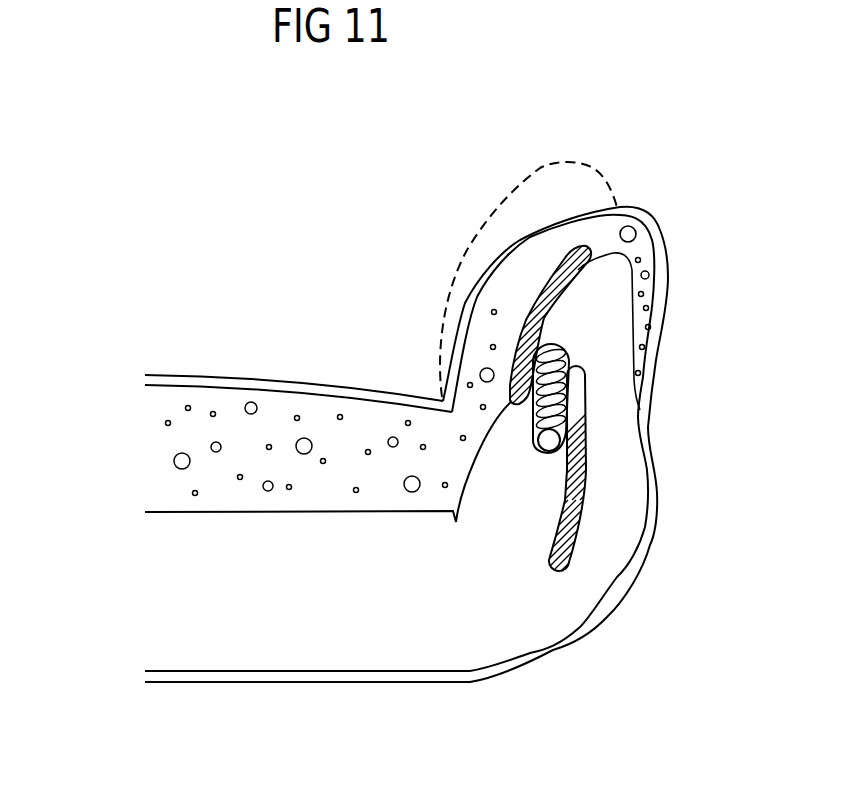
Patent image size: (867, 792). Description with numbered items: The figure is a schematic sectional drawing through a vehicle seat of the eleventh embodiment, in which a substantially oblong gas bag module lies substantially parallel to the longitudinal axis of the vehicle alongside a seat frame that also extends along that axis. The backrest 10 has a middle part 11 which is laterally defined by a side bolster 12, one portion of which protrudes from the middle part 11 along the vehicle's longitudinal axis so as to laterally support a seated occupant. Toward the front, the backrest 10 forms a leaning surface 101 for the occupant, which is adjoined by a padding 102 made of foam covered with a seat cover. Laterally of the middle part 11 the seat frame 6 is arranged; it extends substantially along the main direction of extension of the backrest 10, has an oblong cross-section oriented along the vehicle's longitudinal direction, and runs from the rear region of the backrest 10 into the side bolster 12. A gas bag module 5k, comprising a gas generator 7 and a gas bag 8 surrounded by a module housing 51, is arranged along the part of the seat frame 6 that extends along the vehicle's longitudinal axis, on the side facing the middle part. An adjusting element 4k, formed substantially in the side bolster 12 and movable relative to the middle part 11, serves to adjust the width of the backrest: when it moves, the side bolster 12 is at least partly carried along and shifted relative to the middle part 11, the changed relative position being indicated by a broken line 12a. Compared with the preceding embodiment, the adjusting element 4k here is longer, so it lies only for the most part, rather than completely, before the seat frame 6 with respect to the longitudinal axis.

The backrest 10 is at (588, 647).
The middle part 11 is at (200, 366).
The leaning surface 101 is at (260, 383).
The padding 102 is at (177, 441).
The side bolster 12 is at (498, 276).
The broken line 12a is at (529, 182).
The adjusting element 4k is at (558, 292).
The gas bag 8 is at (570, 363).
The module housing 51 is at (563, 410).
The gas bag module 5k is at (568, 426).
The gas generator 7 is at (550, 441).
The seat frame 6 is at (580, 550).